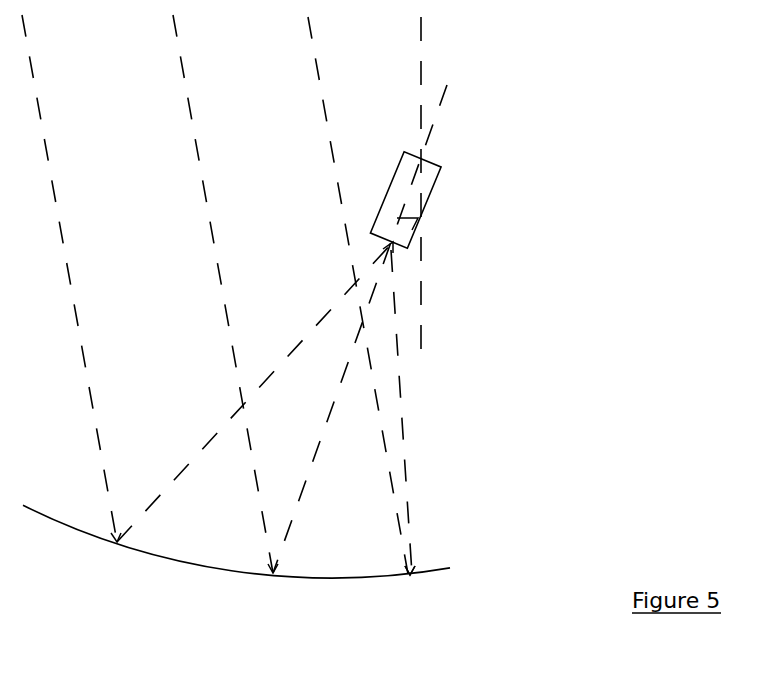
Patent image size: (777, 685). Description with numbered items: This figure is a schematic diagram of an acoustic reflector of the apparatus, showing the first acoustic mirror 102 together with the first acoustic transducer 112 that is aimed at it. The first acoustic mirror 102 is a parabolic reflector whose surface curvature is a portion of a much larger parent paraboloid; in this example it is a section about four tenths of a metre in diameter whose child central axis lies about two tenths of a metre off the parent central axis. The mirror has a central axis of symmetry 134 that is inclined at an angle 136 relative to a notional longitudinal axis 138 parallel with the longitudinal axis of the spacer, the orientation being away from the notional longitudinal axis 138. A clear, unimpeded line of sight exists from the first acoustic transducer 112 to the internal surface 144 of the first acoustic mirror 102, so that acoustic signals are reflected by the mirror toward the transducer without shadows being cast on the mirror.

The first acoustic mirror 102 is at (440, 568).
The first acoustic transducer 112 is at (435, 183).
The central axis of symmetry 134 is at (433, 119).
The angle 136 is at (418, 220).
The notional longitudinal axis 138 is at (421, 63).
The internal surface 144 is at (418, 568).